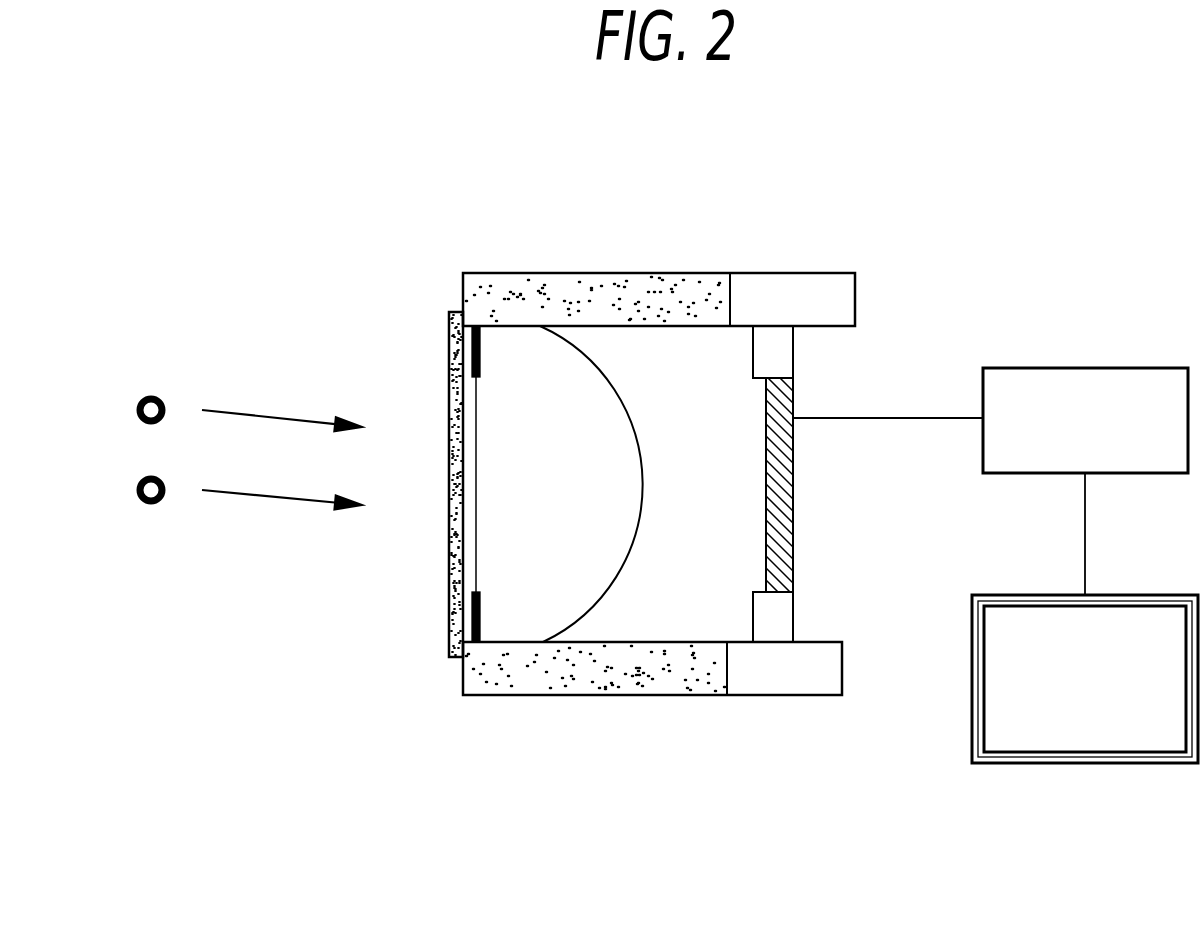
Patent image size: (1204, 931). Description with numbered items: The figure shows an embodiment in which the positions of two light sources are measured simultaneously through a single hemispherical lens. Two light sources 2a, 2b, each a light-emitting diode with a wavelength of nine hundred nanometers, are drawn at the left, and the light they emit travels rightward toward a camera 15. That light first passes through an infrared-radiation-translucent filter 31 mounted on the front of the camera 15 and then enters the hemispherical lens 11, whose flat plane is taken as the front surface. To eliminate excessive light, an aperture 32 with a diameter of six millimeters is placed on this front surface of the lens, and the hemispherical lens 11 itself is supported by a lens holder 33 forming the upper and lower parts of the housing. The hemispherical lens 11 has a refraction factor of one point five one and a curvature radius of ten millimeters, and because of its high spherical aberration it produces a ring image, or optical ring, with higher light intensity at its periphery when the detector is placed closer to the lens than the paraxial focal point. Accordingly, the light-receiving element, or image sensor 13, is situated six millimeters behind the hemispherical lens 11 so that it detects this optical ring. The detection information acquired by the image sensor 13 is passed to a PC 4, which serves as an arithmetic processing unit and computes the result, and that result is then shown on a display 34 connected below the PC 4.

The light source 2a is at (150, 504).
The light source 2b is at (151, 396).
The PC 4 is at (1083, 368).
The hemispherical lens 11 is at (633, 438).
The image sensor 13 is at (793, 530).
The camera 15 is at (612, 423).
The infrared-radiation-translucent filter 31 is at (449, 568).
The aperture 32 is at (472, 610).
The lens holder 33 is at (583, 273).
The display 34 is at (1147, 595).